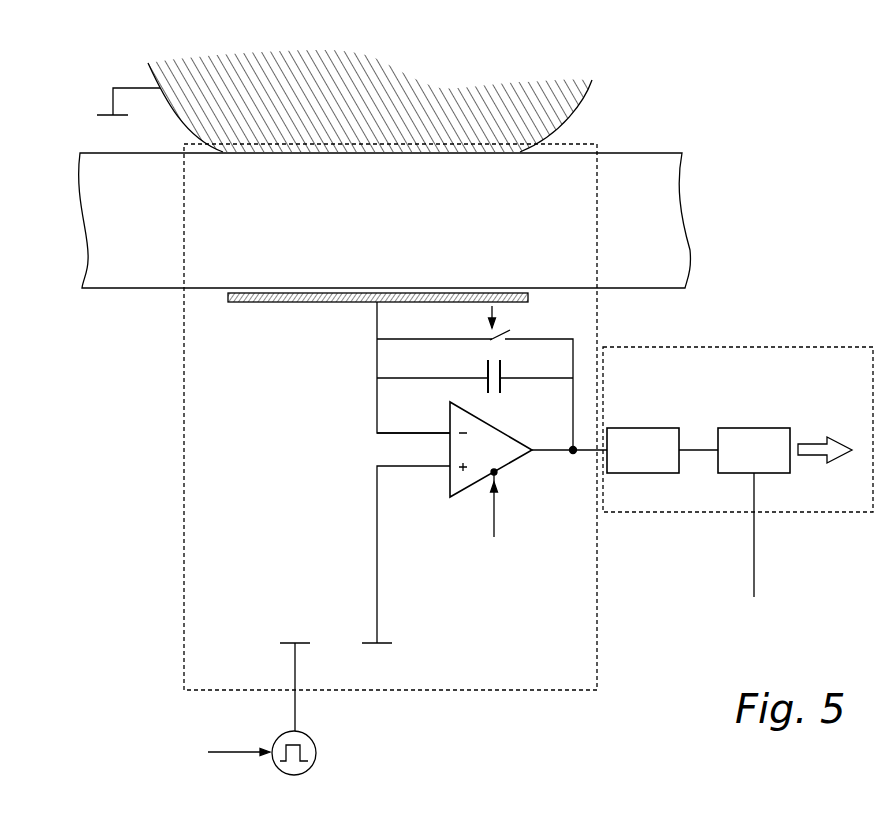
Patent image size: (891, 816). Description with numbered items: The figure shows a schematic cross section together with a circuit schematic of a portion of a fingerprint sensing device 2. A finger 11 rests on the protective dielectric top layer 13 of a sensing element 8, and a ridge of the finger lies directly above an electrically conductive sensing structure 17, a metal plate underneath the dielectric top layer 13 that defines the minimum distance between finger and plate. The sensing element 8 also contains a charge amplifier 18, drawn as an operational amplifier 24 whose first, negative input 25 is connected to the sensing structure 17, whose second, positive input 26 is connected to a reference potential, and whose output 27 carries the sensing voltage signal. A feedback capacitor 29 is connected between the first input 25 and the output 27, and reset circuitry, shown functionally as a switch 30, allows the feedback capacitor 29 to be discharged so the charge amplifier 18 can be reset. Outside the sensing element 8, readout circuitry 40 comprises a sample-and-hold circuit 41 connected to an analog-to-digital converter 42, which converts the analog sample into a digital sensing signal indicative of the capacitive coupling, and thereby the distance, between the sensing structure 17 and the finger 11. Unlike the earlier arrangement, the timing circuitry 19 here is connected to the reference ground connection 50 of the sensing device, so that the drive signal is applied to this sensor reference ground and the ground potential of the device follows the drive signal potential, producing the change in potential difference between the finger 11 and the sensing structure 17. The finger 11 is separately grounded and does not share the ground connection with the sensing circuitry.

The fingerprint sensing device 2 is at (687, 108).
The sensing element 8 is at (200, 590).
The finger 11 is at (438, 108).
The protective dielectric top layer 13 is at (140, 272).
The sensing structure 17 is at (295, 303).
The charge amplifier 18 is at (340, 456).
The timing circuitry 19 is at (316, 748).
The operational amplifier 24 is at (462, 495).
The first input 25 is at (447, 433).
The second input 26 is at (447, 468).
The output 27 is at (538, 452).
The feedback capacitor 29 is at (503, 387).
The reset circuitry 30 is at (492, 334).
The readout circuitry 40 is at (745, 347).
The sample-and-hold circuit 41 is at (640, 428).
The analog-to-digital converter 42 is at (762, 428).
The reference ground connection 50 is at (302, 645).